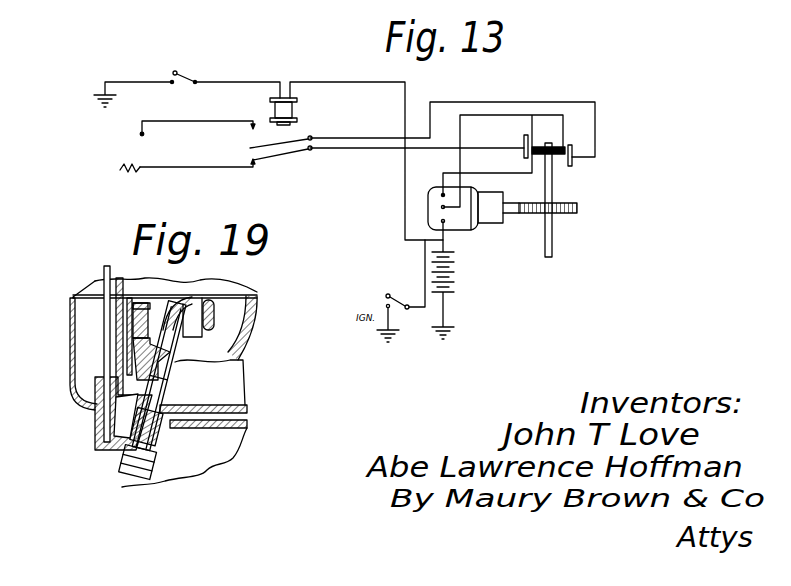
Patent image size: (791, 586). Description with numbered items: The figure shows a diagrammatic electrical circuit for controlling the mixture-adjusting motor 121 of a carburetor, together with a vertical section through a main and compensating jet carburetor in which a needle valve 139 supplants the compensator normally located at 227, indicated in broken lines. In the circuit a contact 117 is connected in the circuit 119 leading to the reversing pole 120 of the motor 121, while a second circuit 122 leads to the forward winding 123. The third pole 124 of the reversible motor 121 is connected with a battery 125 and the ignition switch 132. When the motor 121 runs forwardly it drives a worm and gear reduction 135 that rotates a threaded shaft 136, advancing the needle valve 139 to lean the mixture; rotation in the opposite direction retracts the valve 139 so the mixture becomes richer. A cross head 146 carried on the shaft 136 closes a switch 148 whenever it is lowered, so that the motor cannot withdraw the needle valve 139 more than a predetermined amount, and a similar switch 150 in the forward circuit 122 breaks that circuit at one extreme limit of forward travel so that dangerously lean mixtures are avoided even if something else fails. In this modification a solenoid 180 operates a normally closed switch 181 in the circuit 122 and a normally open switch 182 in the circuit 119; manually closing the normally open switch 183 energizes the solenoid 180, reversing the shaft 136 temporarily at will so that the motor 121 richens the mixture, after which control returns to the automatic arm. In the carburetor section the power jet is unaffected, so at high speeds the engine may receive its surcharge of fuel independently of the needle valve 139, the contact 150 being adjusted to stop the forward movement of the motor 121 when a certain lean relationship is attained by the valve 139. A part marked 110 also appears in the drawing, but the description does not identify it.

In FIG. 13, the circuit terminal 110 is at (113, 171).
In FIG. 13, the contact 117 is at (140, 134).
In FIG. 13, the circuit 119 is at (218, 122).
In FIG. 13, the reversing pole 120 is at (441, 207).
In FIG. 13, the motor 121 is at (466, 225).
In FIG. 13, the circuit 122 is at (221, 168).
In FIG. 13, the forward winding 123 is at (441, 195).
In FIG. 13, the third pole 124 is at (441, 221).
In FIG. 13, the battery 125 is at (455, 273).
In FIG. 13, the ignition switch 132 is at (400, 289).
In FIG. 13, the worm and gear reduction 135 is at (565, 215).
In FIG. 13, the shaft 136 is at (552, 197).
In FIG. 13, the cross head 146 is at (540, 147).
In FIG. 13, the switch 148 is at (574, 152).
In FIG. 13, the switch 150 is at (525, 135).
In FIG. 13, the solenoid 180 is at (297, 111).
In FIG. 13, the normally closed switch 181 is at (297, 151).
In FIG. 13, the normally open switch 182 is at (282, 141).
In FIG. 13, the normally open switch 183 is at (208, 69).
In FIG. 19, the needle valve 139 is at (104, 332).
In FIG. 19, the compensator location 227 is at (100, 413).